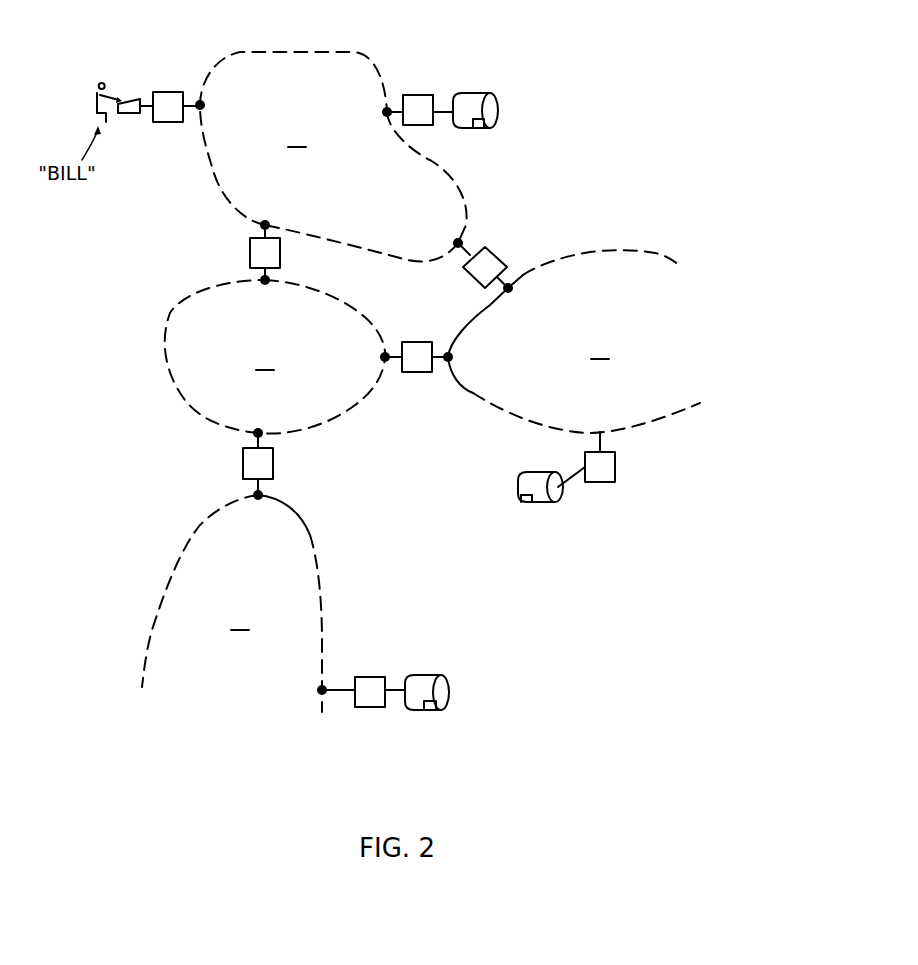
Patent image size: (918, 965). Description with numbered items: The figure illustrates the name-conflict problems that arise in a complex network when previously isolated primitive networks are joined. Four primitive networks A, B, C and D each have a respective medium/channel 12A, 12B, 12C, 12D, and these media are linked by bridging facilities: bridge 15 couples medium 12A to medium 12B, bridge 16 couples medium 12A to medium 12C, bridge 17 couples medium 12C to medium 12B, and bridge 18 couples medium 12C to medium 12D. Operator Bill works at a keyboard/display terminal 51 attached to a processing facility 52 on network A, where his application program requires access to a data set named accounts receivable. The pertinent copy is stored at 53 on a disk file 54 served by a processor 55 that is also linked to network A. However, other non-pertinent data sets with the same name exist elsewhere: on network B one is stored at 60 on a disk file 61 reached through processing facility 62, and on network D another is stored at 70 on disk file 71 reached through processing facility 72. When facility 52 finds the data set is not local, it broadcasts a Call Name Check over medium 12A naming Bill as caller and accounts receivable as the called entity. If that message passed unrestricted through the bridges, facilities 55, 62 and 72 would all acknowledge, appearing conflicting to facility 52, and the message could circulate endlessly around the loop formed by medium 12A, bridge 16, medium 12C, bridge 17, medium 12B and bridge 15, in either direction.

The medium/channel of primitive network A 12A is at (282, 52).
The medium/channel of primitive network B 12B is at (623, 250).
The medium/channel of primitive network C 12C is at (197, 412).
The medium/channel of primitive network D 12D is at (148, 642).
The bridging facility 15 is at (492, 257).
The bridging facility 16 is at (250, 248).
The bridging facility 17 is at (408, 342).
The bridging facility 18 is at (275, 458).
The keyboard/display terminal 51 is at (129, 99).
The processing facility 52 is at (177, 123).
The stored data set location 53 is at (477, 128).
The disk file 54 is at (485, 93).
The processor 55 is at (413, 95).
The stored data set location 60 is at (523, 502).
The disk file 61 is at (558, 502).
The processing facility 62 is at (598, 482).
The stored data set location 70 is at (433, 708).
The disk file 71 is at (435, 675).
The processing facility 72 is at (360, 677).